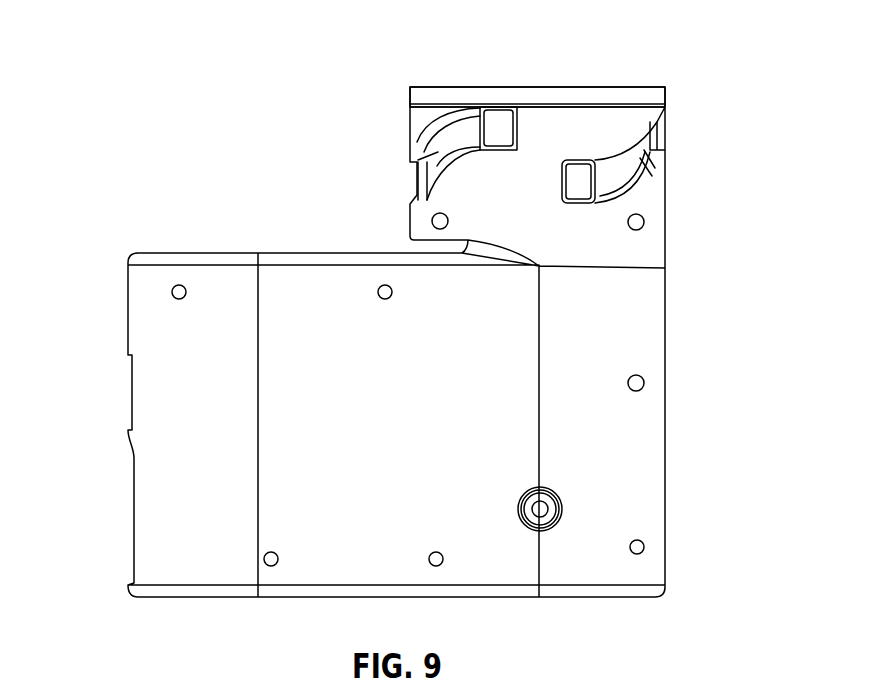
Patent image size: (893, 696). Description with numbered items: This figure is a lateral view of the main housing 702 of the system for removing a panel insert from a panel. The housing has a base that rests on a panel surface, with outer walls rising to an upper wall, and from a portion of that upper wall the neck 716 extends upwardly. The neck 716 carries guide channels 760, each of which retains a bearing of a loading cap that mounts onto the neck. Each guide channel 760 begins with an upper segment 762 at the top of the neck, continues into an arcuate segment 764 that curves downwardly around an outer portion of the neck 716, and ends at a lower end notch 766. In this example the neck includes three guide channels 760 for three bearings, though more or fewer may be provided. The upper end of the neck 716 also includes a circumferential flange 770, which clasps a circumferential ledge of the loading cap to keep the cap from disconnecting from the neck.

The main housing 702 is at (136, 217).
The neck 716 is at (667, 108).
The circumferential flange 770 is at (661, 96).
The upper segment 762 is at (505, 120).
The guide channel 760 is at (483, 128).
The arcuate segment 764 is at (440, 148).
The lower end notch 766 is at (583, 183).